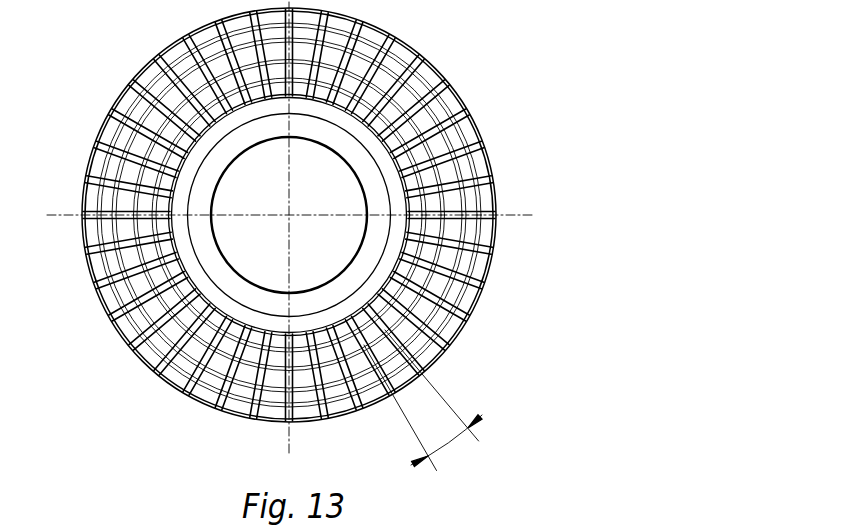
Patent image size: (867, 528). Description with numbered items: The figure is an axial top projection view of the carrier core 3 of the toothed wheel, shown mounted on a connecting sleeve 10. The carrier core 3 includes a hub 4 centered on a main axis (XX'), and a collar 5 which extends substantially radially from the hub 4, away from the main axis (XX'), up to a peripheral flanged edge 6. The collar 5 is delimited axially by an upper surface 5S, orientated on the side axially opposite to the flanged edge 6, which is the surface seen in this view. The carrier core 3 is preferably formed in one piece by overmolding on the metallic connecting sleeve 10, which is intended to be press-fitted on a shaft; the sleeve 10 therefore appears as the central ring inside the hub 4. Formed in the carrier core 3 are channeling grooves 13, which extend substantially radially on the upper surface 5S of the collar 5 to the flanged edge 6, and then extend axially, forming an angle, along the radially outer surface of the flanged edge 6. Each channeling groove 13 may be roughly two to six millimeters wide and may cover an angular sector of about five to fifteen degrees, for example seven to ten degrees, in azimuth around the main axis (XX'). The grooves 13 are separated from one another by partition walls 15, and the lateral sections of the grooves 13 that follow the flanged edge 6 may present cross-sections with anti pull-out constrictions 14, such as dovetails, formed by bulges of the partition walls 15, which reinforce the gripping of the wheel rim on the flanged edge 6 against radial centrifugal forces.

The carrier core 3 is at (303, 235).
The hub 4 is at (358, 122).
The collar 5 is at (303, 235).
The upper surface 5S is at (393, 70).
The peripheral flanged edge 6 is at (493, 163).
The connecting sleeve 10 is at (210, 168).
The channeling grooves 13 is at (177, 53).
The anti pull-out constriction 14 is at (170, 378).
The partition walls 15 is at (492, 250).
The main axis XX' is at (290, 228).